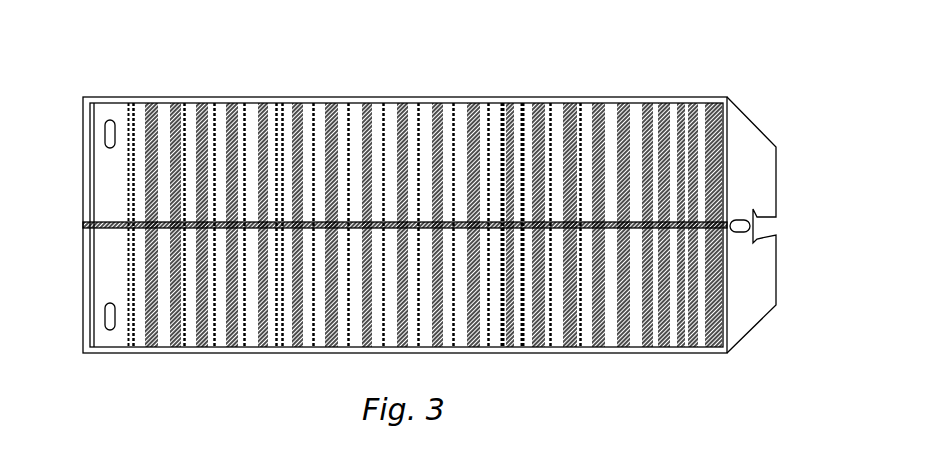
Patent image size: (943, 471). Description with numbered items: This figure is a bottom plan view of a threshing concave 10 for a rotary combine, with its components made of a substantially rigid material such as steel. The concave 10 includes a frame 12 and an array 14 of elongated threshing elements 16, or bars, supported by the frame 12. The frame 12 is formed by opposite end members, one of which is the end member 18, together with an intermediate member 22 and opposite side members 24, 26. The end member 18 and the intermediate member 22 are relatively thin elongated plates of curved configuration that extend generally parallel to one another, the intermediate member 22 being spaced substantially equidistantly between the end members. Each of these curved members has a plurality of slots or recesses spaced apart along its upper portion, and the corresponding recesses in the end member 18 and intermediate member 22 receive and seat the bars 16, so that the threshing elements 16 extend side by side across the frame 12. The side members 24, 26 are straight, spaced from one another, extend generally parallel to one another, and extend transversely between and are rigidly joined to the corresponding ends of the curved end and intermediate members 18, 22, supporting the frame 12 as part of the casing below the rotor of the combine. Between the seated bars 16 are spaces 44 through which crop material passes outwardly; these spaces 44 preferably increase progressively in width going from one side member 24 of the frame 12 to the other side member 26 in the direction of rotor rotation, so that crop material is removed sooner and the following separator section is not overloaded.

The threshing concave 10 is at (172, 78).
The frame 12 is at (358, 353).
The array of elongated threshing elements 14 is at (558, 140).
The threshing elements 16 is at (462, 118).
The end member 18 is at (300, 340).
The intermediate member 22 is at (83, 226).
The side member 24 is at (735, 128).
The side member 26 is at (112, 178).
The spaces between the bars 44 is at (308, 118).